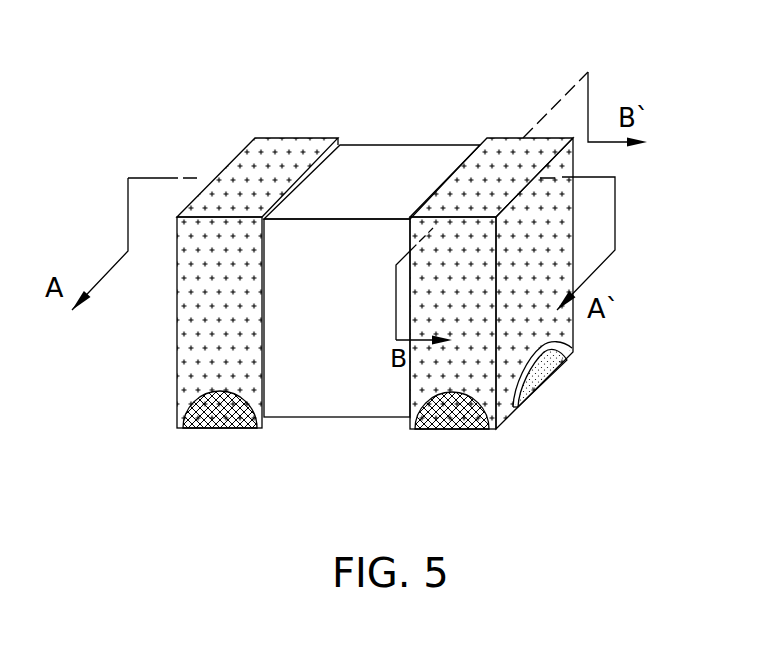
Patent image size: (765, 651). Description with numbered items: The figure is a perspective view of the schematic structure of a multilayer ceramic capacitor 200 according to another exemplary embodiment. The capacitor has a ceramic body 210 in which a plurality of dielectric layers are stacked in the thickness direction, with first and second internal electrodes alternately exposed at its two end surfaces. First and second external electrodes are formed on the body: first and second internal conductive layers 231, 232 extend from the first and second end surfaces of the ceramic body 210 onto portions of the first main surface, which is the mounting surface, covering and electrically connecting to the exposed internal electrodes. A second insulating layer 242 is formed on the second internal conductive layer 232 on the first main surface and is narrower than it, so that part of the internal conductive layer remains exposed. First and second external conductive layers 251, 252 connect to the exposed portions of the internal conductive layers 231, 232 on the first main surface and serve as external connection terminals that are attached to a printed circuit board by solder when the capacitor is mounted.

The multilayer ceramic capacitor 200 is at (444, 45).
The ceramic body 210 is at (377, 147).
The first internal conductive layer 231 is at (277, 150).
The second internal conductive layer 232 is at (507, 152).
The second insulating layer 242 is at (552, 363).
The first external conductive layer 251 is at (222, 430).
The second external conductive layer 252 is at (457, 430).